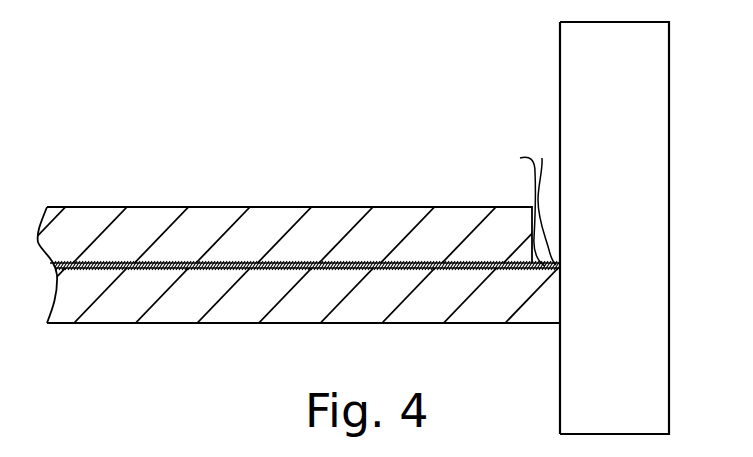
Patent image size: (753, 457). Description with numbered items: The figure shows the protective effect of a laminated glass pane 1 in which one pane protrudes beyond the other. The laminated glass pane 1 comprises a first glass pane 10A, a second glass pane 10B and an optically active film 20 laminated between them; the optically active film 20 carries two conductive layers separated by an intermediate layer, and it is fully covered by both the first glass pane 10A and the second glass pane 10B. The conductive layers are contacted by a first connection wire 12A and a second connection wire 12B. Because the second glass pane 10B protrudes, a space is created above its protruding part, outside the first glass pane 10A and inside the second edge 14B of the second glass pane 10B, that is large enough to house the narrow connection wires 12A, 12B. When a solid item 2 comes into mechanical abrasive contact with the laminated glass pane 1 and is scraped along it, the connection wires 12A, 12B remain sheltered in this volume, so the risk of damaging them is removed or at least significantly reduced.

The laminated glass pane 1 is at (102, 116).
The solid item 2 is at (640, 198).
The first glass pane 10A is at (330, 218).
The second glass pane 10B is at (125, 310).
The first connection wire 12A is at (542, 158).
The second connection wire 12B is at (520, 158).
The second edge 14B is at (560, 296).
The optically active film 20 is at (235, 268).